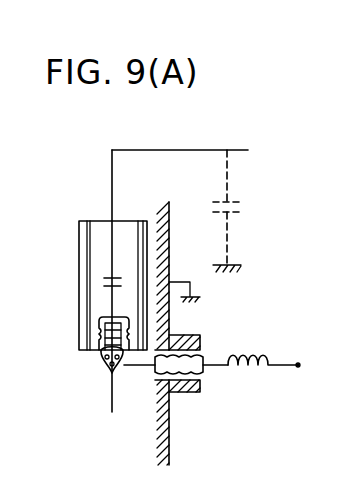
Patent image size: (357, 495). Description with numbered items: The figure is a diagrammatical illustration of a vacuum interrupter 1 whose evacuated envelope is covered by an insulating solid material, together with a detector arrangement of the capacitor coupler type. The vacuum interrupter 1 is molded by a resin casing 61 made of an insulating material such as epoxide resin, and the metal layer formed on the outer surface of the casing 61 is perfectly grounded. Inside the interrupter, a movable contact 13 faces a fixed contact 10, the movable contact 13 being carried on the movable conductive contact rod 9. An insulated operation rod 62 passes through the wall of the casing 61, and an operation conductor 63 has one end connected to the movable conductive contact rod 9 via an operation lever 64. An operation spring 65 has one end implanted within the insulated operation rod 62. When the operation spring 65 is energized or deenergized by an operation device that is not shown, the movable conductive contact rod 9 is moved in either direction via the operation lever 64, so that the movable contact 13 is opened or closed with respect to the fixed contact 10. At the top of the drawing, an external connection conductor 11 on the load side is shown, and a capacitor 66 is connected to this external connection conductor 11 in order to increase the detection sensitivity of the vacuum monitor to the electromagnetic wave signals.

The vacuum interrupter 1 is at (95, 213).
The movable conductive contact rod 9 is at (110, 390).
The fixed contact 10 is at (104, 278).
The external connection conductor 11 is at (172, 150).
The movable contact 13 is at (104, 286).
The resin casing 61 is at (167, 251).
The insulated operation rod 62 is at (200, 357).
The operation conductor 63 is at (131, 368).
The operation lever 64 is at (100, 356).
The operation spring 65 is at (253, 363).
The capacitor 66 is at (229, 203).